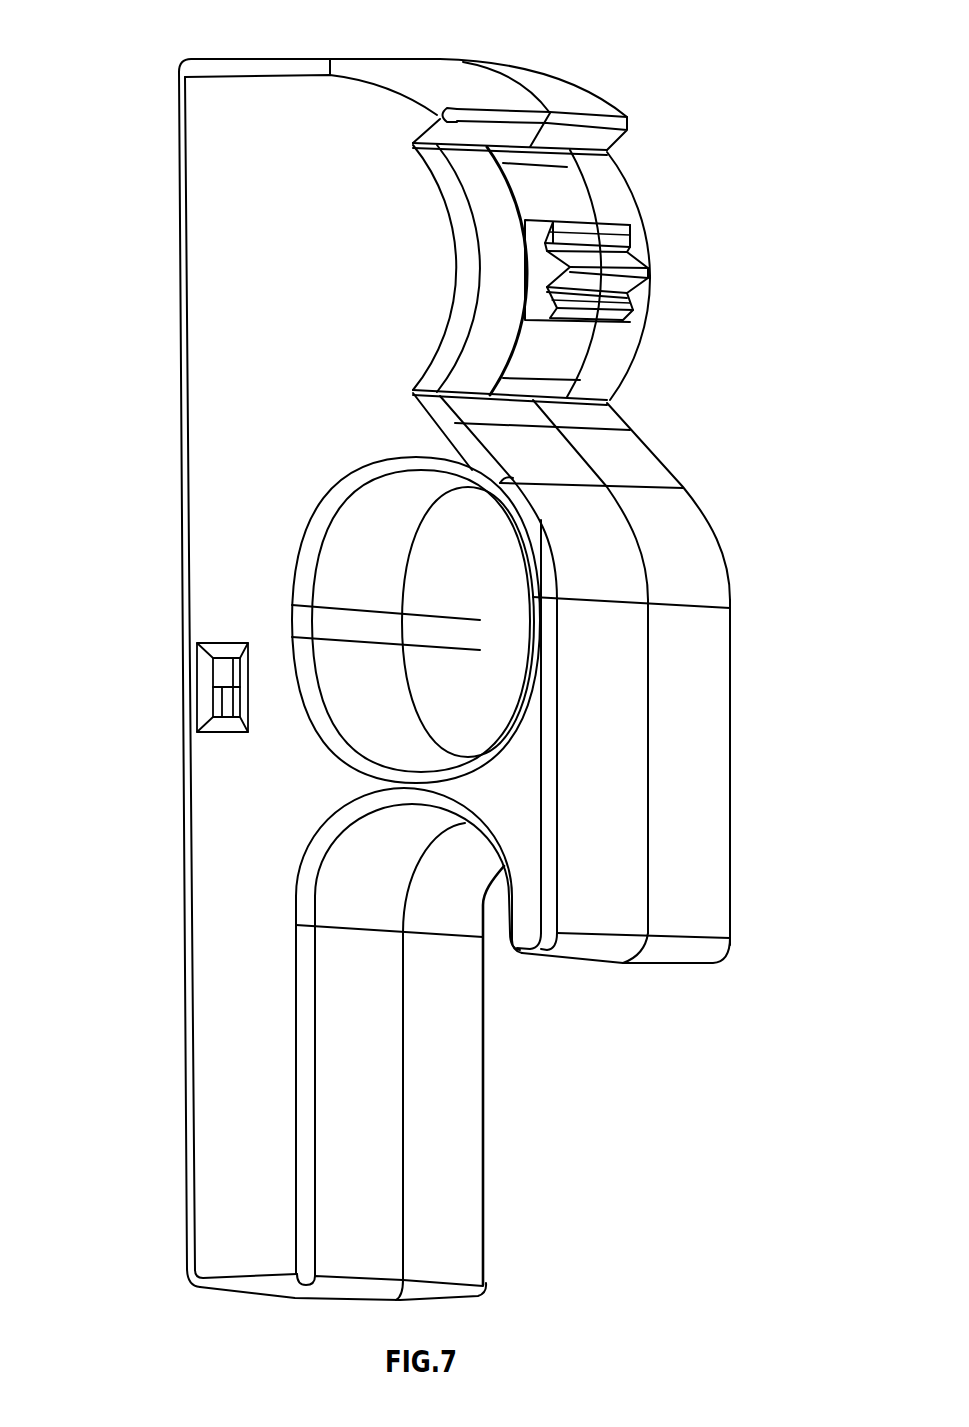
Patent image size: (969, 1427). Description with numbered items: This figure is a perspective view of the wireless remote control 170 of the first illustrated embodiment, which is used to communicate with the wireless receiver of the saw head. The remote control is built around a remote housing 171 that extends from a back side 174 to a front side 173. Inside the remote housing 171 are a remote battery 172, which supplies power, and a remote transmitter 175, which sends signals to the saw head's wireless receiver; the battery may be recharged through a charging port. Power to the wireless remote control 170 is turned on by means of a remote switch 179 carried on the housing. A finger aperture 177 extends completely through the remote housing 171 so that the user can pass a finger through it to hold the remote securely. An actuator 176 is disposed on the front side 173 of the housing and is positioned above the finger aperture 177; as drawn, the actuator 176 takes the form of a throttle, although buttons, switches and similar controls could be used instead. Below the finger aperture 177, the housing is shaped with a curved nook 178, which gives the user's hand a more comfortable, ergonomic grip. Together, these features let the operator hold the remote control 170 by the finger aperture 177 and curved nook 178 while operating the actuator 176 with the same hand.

The wireless remote control 170 is at (122, 52).
The remote housing 171 is at (640, 473).
The remote battery 172 is at (200, 1040).
The front side 173 is at (615, 712).
The back side 174 is at (186, 374).
The remote transmitter 175 is at (213, 258).
The actuator 176 is at (550, 270).
The finger aperture 177 is at (333, 620).
The curved nook 178 is at (462, 905).
The remote switch 179 is at (220, 733).